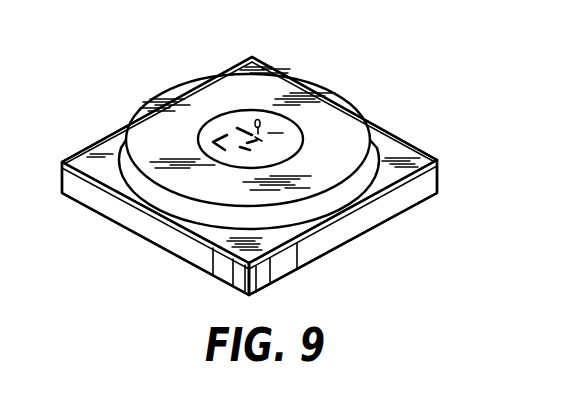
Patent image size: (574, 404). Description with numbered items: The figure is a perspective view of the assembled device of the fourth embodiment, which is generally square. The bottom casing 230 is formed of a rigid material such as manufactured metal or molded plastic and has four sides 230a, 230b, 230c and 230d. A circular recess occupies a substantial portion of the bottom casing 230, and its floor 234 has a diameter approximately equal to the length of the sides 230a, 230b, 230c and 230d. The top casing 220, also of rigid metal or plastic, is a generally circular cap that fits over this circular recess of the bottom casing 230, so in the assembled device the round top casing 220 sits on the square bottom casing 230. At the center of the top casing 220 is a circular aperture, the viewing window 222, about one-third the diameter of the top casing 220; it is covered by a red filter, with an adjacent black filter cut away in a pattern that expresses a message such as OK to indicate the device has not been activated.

The top casing 220 is at (303, 68).
The viewing window 222 is at (233, 118).
The bottom casing 230 is at (157, 252).
The side of bottom casing 230a is at (118, 130).
The side of bottom casing 230b is at (127, 205).
The side of bottom casing 230c is at (352, 230).
The side of bottom casing 230d is at (408, 146).
The floor of circular recess 234 is at (297, 134).